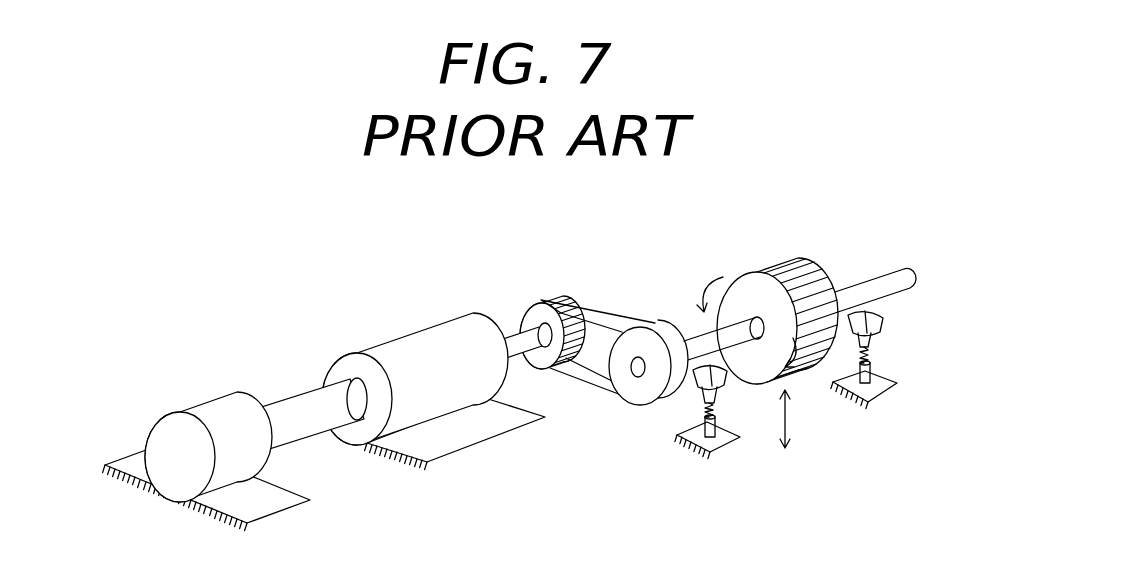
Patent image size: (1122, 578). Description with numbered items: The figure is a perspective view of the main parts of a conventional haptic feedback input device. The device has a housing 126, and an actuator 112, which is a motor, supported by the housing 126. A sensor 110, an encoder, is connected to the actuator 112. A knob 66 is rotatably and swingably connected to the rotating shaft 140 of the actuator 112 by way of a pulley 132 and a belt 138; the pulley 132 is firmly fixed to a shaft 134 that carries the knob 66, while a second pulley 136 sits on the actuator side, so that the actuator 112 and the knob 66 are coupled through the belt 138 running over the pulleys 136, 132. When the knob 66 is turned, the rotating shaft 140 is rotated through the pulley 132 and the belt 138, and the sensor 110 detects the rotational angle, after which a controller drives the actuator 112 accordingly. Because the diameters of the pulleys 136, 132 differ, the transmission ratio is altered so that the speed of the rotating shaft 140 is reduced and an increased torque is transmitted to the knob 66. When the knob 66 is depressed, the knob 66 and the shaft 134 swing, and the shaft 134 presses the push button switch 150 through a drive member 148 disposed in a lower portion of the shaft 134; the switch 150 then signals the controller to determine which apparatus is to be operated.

The knob 66 is at (807, 282).
The sensor 110 is at (200, 410).
The actuator 112 is at (412, 342).
The housing 126 is at (260, 508).
The pulley 132 is at (636, 340).
The shaft 134 is at (701, 340).
The pulley 136 is at (545, 357).
The belt 138 is at (593, 307).
The rotating shaft 140 is at (512, 332).
The drive member 148 is at (720, 380).
The push button switch 150 is at (707, 447).